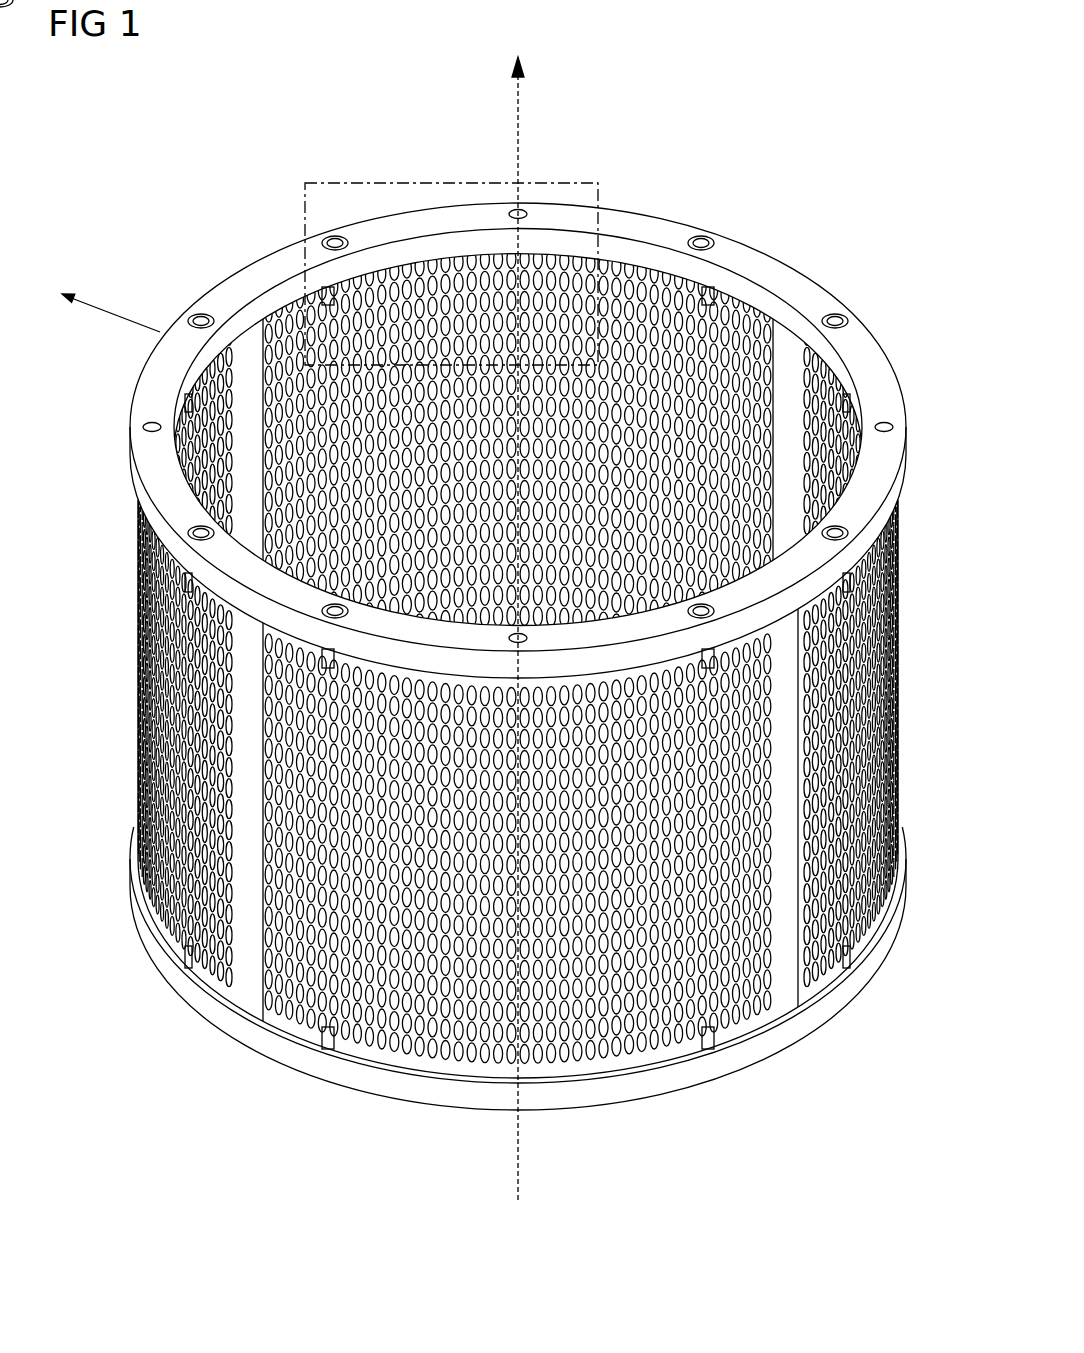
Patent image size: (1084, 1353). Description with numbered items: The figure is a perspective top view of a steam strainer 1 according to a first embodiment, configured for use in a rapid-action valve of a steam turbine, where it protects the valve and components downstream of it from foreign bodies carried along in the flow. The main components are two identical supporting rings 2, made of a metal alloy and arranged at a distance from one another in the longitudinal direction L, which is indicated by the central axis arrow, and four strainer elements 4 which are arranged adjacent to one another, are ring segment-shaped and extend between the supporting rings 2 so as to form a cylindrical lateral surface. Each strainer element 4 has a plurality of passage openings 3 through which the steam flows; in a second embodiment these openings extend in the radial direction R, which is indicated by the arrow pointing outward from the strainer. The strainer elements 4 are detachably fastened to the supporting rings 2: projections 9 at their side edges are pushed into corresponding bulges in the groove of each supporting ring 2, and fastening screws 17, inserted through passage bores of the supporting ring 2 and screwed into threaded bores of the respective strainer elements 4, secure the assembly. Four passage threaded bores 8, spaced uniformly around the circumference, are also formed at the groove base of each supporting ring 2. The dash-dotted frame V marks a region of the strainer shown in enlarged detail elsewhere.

The steam strainer 1 is at (481, 578).
The supporting ring 2 is at (262, 272).
The passage opening 3 is at (650, 1050).
The strainer element 4 is at (735, 298).
The passage threaded bore 8 is at (522, 212).
The projection 9 is at (187, 958).
The fastening screw 17 is at (704, 236).
The longitudinal direction L is at (522, 96).
The detail view V is at (372, 183).
The radial direction R is at (100, 306).